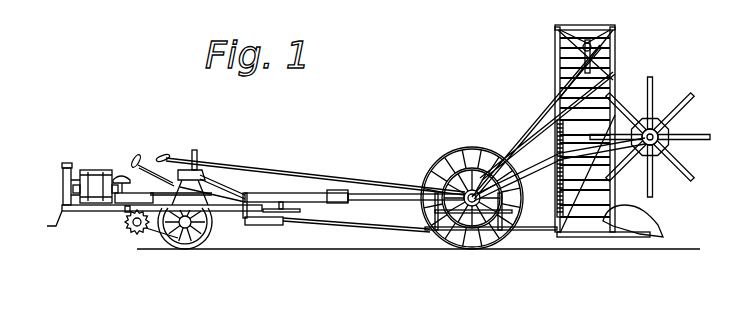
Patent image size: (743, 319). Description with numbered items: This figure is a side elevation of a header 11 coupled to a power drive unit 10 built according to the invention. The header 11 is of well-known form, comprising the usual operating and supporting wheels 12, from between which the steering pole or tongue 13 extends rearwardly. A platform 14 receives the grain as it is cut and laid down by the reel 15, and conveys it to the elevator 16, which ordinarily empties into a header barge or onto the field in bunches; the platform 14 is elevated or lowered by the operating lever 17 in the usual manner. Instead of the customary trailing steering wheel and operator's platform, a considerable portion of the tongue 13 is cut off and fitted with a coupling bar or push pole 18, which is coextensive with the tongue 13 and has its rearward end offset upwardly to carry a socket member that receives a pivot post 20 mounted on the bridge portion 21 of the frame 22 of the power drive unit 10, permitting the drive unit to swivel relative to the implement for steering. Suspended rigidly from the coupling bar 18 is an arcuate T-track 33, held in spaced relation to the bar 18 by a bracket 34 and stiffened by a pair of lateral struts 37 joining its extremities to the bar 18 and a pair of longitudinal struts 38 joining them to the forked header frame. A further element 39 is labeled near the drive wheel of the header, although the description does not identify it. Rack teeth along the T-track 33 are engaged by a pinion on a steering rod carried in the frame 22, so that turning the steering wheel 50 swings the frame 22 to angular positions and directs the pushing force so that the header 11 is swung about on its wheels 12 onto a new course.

The power drive unit 10 is at (78, 157).
The header 11 is at (472, 193).
The operating and supporting wheels 12 is at (430, 232).
The steering pole or tongue 13 is at (362, 194).
The platform 14 is at (618, 238).
The reel 15 is at (692, 134).
The elevator 16 is at (615, 66).
The operating lever 17 is at (280, 168).
The coupling bar or push pole 18 is at (303, 199).
The pivot post 20 is at (182, 165).
The bridge portion 21 is at (200, 177).
The frame 22 is at (97, 213).
The arcuate T-track 33 is at (260, 226).
The bracket 34 is at (290, 206).
The lateral struts 37 is at (243, 215).
The longitudinal struts 38 is at (318, 221).
The wheel rim 39 is at (453, 236).
The steering wheel 50 is at (147, 155).